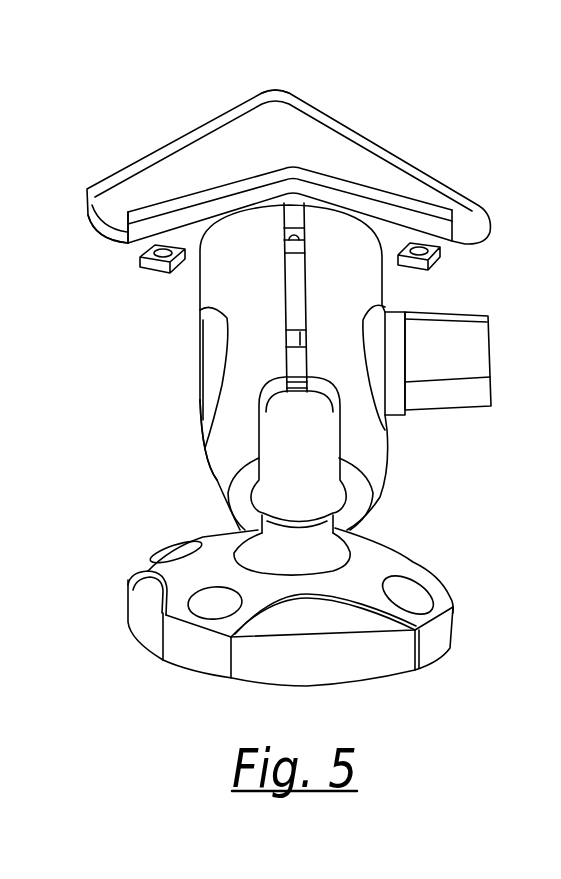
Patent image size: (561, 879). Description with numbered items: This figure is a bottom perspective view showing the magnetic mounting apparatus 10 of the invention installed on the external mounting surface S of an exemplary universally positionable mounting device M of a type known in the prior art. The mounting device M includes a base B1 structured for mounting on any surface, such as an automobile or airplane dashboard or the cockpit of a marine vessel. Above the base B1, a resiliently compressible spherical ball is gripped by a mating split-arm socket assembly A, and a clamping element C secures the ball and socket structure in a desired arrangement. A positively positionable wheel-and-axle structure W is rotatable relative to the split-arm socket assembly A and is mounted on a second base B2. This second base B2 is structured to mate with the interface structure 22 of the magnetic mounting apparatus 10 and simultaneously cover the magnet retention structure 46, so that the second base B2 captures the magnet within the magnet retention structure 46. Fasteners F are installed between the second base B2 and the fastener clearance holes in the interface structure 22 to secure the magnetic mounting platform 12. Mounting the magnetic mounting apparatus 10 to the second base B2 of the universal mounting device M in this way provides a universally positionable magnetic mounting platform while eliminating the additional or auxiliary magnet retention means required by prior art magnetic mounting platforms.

The magnetic mounting apparatus 10 is at (388, 86).
The magnetic mounting platform 12 is at (155, 153).
The interface structure 22 is at (129, 211).
The magnet retention structure 46 is at (267, 173).
The split-arm socket assembly A is at (262, 290).
The external mounting surface S is at (307, 475).
The clamping element C is at (432, 438).
The base B1 is at (135, 622).
The second base B2 is at (124, 243).
The fasteners F is at (160, 263).
The wheel-and-axle structure W is at (129, 312).
The universally positionable mounting device M is at (147, 464).